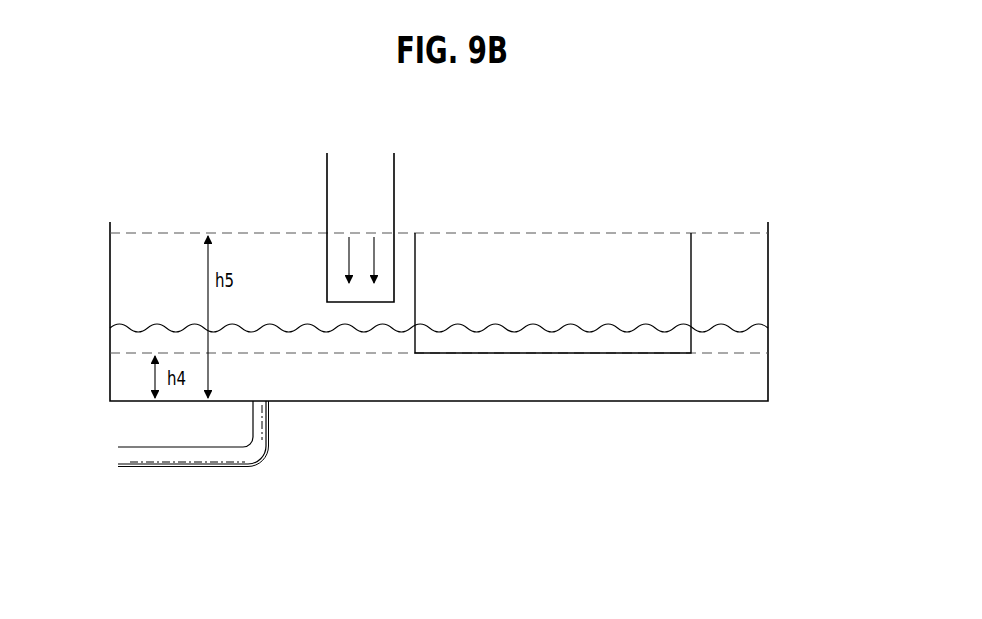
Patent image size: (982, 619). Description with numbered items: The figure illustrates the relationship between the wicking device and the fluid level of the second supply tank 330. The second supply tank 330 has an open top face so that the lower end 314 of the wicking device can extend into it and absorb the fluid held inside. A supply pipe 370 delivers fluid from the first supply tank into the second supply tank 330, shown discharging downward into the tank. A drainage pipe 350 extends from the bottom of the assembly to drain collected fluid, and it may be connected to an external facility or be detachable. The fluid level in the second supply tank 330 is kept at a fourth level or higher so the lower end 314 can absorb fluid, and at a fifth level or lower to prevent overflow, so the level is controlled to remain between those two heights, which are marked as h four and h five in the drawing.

The second supply tank 330 is at (768, 300).
The lower end 314 is at (552, 345).
The supply pipe 370 is at (386, 178).
The drainage pipe 350 is at (186, 464).